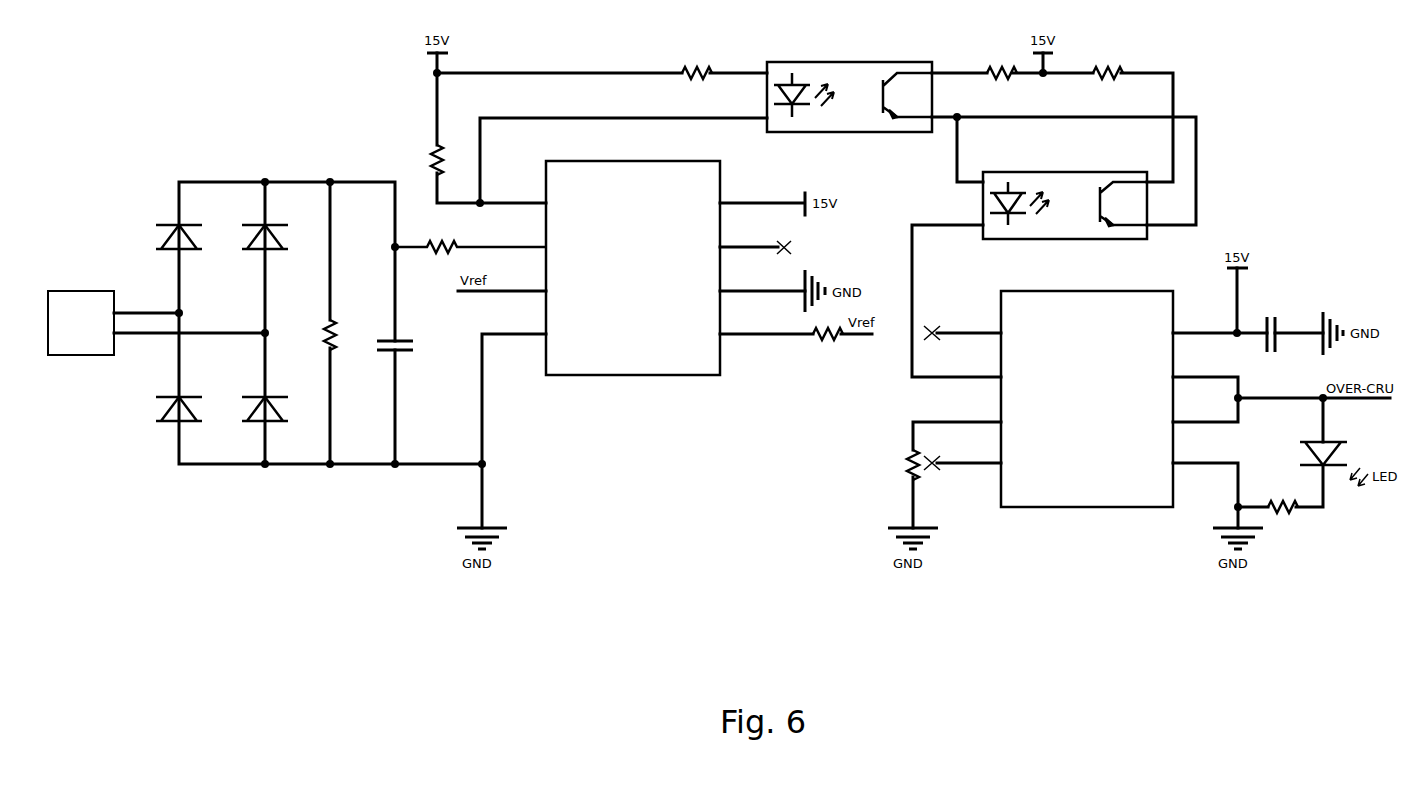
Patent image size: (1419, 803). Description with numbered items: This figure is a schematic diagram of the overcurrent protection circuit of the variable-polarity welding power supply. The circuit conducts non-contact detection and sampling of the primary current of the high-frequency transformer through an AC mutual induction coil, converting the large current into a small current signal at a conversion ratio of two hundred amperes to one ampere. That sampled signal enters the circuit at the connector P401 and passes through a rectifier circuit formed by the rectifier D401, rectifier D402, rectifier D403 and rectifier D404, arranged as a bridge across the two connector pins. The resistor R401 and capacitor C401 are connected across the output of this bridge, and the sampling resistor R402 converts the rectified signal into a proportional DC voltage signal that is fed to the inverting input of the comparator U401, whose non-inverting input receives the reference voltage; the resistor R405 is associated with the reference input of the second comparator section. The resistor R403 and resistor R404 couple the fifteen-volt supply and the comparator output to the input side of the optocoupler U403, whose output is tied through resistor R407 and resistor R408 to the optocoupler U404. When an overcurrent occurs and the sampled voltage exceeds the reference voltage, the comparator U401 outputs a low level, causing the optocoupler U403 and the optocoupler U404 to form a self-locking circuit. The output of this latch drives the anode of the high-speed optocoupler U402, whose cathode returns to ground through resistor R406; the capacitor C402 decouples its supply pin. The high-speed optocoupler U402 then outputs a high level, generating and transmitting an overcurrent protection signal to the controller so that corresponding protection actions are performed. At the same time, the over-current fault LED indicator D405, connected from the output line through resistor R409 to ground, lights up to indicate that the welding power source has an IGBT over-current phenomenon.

The input connector P401 is at (81, 311).
The rectifier D401 is at (197, 237).
The rectifier D402 is at (197, 419).
The rectifier D403 is at (284, 237).
The rectifier D404 is at (280, 419).
The over-current fault LED indicator D405 is at (1348, 463).
The resistor R401 is at (348, 332).
The sampling resistor R402 is at (470, 236).
The resistor R403 is at (418, 156).
The resistor R404 is at (694, 62).
The resistor R405 is at (824, 344).
The resistor R406 is at (892, 460).
The resistor R407 is at (996, 62).
The resistor R408 is at (1105, 62).
The resistor R409 is at (1276, 497).
The capacitor C401 is at (414, 350).
The capacitor C402 is at (1275, 323).
The comparator U401 is at (631, 269).
The high-speed optocoupler U402 is at (1086, 397).
The optocoupler U403 is at (849, 97).
The optocoupler U404 is at (1069, 204).